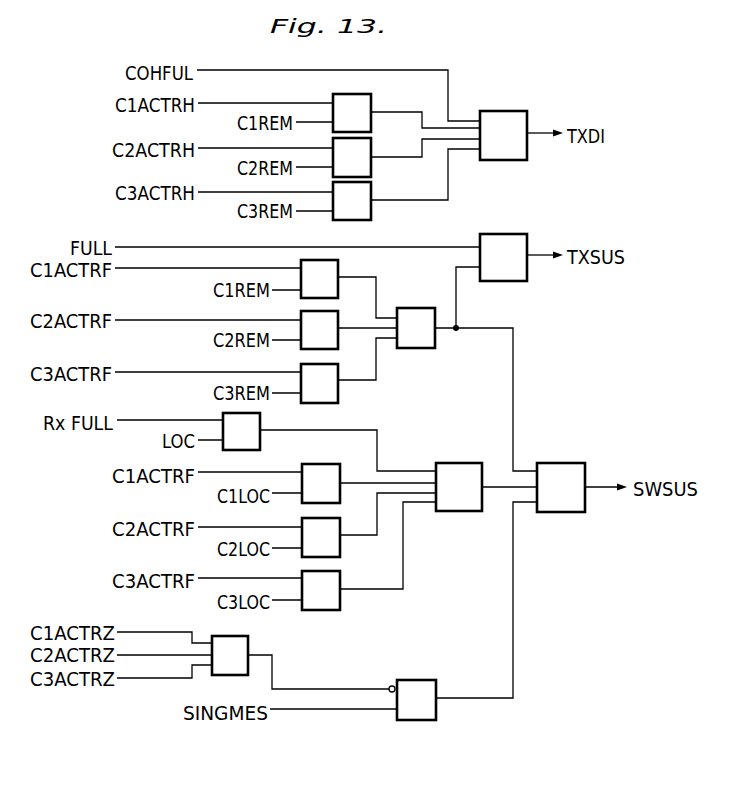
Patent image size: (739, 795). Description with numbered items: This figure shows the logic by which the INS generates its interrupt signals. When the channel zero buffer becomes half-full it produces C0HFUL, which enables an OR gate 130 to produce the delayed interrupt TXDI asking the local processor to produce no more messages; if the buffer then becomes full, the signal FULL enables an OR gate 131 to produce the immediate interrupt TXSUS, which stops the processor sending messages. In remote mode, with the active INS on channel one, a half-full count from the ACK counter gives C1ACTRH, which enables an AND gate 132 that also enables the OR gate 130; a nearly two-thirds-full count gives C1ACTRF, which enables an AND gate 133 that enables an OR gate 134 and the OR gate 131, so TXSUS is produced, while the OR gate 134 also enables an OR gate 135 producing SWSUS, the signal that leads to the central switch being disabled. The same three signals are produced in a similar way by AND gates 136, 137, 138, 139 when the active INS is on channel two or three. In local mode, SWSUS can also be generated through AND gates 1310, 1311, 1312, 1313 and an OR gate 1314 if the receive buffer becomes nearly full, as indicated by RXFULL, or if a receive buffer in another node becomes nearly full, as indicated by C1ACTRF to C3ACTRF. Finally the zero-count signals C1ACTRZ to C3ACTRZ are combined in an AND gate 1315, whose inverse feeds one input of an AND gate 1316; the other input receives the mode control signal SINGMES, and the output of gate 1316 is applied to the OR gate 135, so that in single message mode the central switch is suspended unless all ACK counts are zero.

The OR gate 130 is at (520, 110).
The OR gate 131 is at (531, 243).
The AND gate 132 is at (373, 100).
The AND gate 133 is at (340, 262).
The OR gate 134 is at (438, 342).
The OR gate 135 is at (570, 462).
The AND gate 136 is at (371, 170).
The AND gate 137 is at (373, 208).
The AND gate 138 is at (340, 322).
The AND gate 139 is at (340, 395).
The AND gate 1310 is at (262, 442).
The AND gate 1311 is at (341, 500).
The AND gate 1312 is at (342, 555).
The AND gate 1313 is at (342, 610).
The OR gate 1314 is at (476, 462).
The AND gate 1315 is at (250, 640).
The AND gate 1316 is at (425, 680).